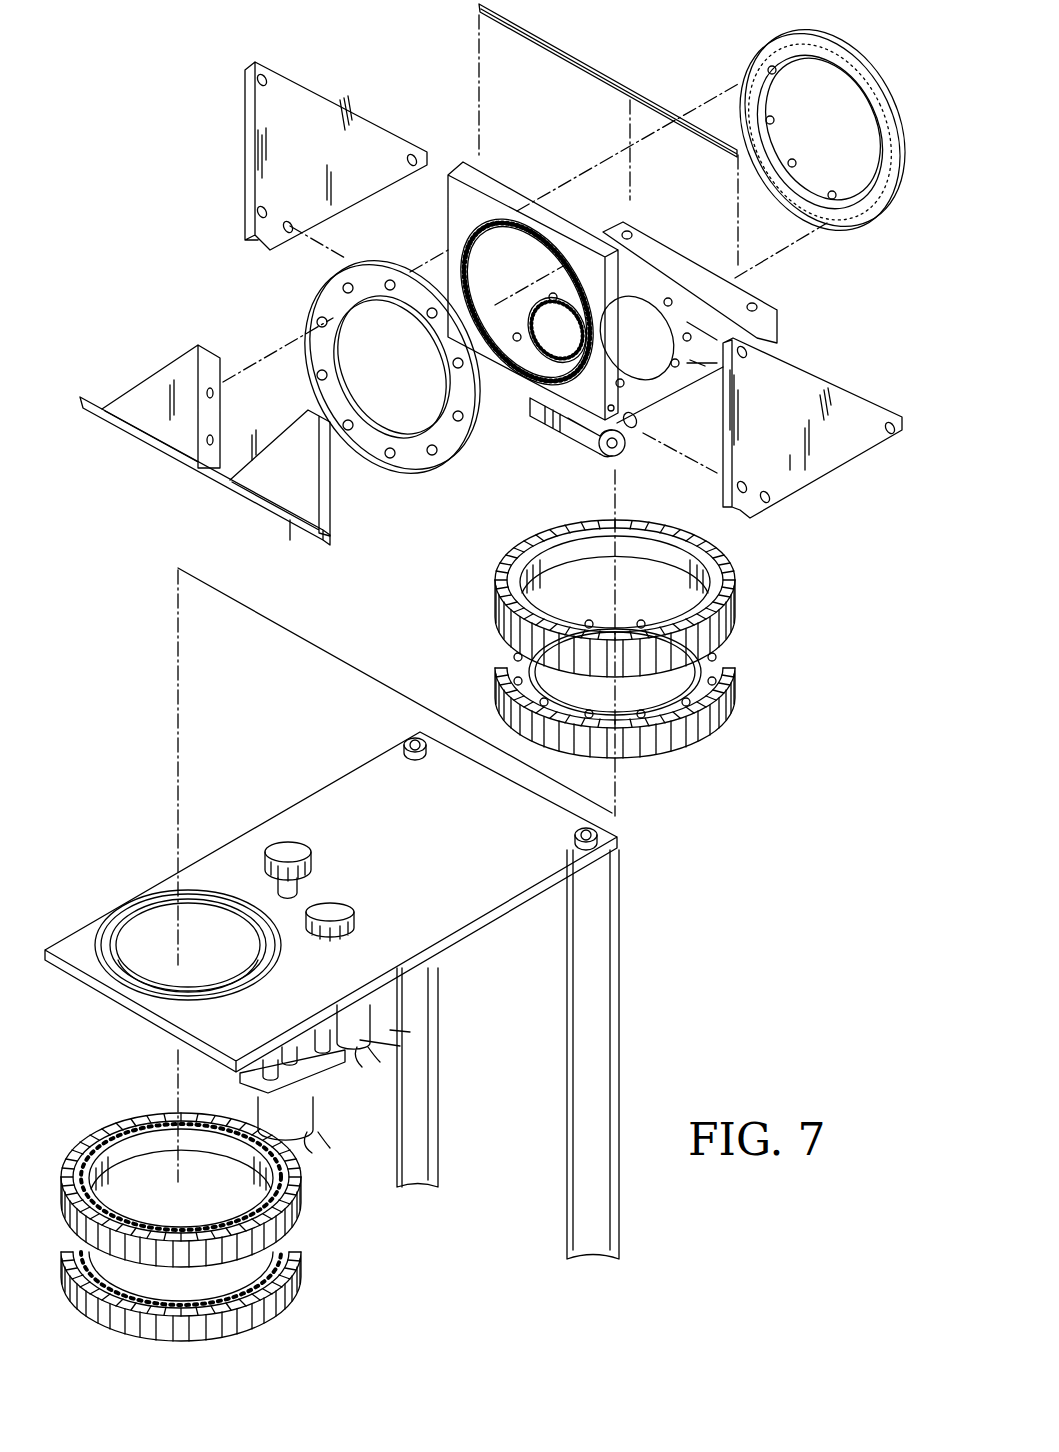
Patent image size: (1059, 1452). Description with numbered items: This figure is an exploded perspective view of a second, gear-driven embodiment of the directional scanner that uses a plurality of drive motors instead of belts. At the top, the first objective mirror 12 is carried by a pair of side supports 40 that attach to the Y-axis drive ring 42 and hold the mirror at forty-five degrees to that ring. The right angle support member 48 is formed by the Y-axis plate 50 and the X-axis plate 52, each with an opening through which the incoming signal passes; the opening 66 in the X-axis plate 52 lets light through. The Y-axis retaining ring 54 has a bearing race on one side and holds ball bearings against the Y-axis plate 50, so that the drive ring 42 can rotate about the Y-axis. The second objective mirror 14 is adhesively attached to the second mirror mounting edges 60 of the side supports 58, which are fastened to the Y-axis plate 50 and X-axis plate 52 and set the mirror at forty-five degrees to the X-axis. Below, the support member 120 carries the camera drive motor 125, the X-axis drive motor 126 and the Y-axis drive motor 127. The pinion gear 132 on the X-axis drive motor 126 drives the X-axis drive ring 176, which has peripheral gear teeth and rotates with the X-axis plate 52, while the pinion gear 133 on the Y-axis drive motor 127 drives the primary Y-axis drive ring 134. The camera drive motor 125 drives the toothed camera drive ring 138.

The first objective mirror 12 is at (150, 440).
The second objective mirror 14 is at (597, 62).
The side supports 40 is at (158, 385).
The Y-axis drive ring 42 is at (442, 468).
The right angle support member 48 is at (630, 430).
The Y-axis plate 50 is at (572, 430).
The X-axis plate 52 is at (680, 395).
The Y-axis retaining ring 54 is at (763, 67).
The second mirror side supports 58 is at (285, 102).
The second mirror mounting edge 60 is at (343, 110).
The opening 66 is at (658, 350).
The support member 120 is at (617, 850).
The camera drive motor 125 is at (316, 1103).
The X-axis drive motor 126 is at (377, 1020).
The Y-axis drive motor 127 is at (293, 887).
The pinion gear 132 is at (347, 913).
The pinion gear 133 is at (298, 852).
The primary Y-axis drive ring 134 is at (740, 612).
The camera drive ring 138 is at (303, 1210).
The X-axis drive ring 176 is at (733, 707).